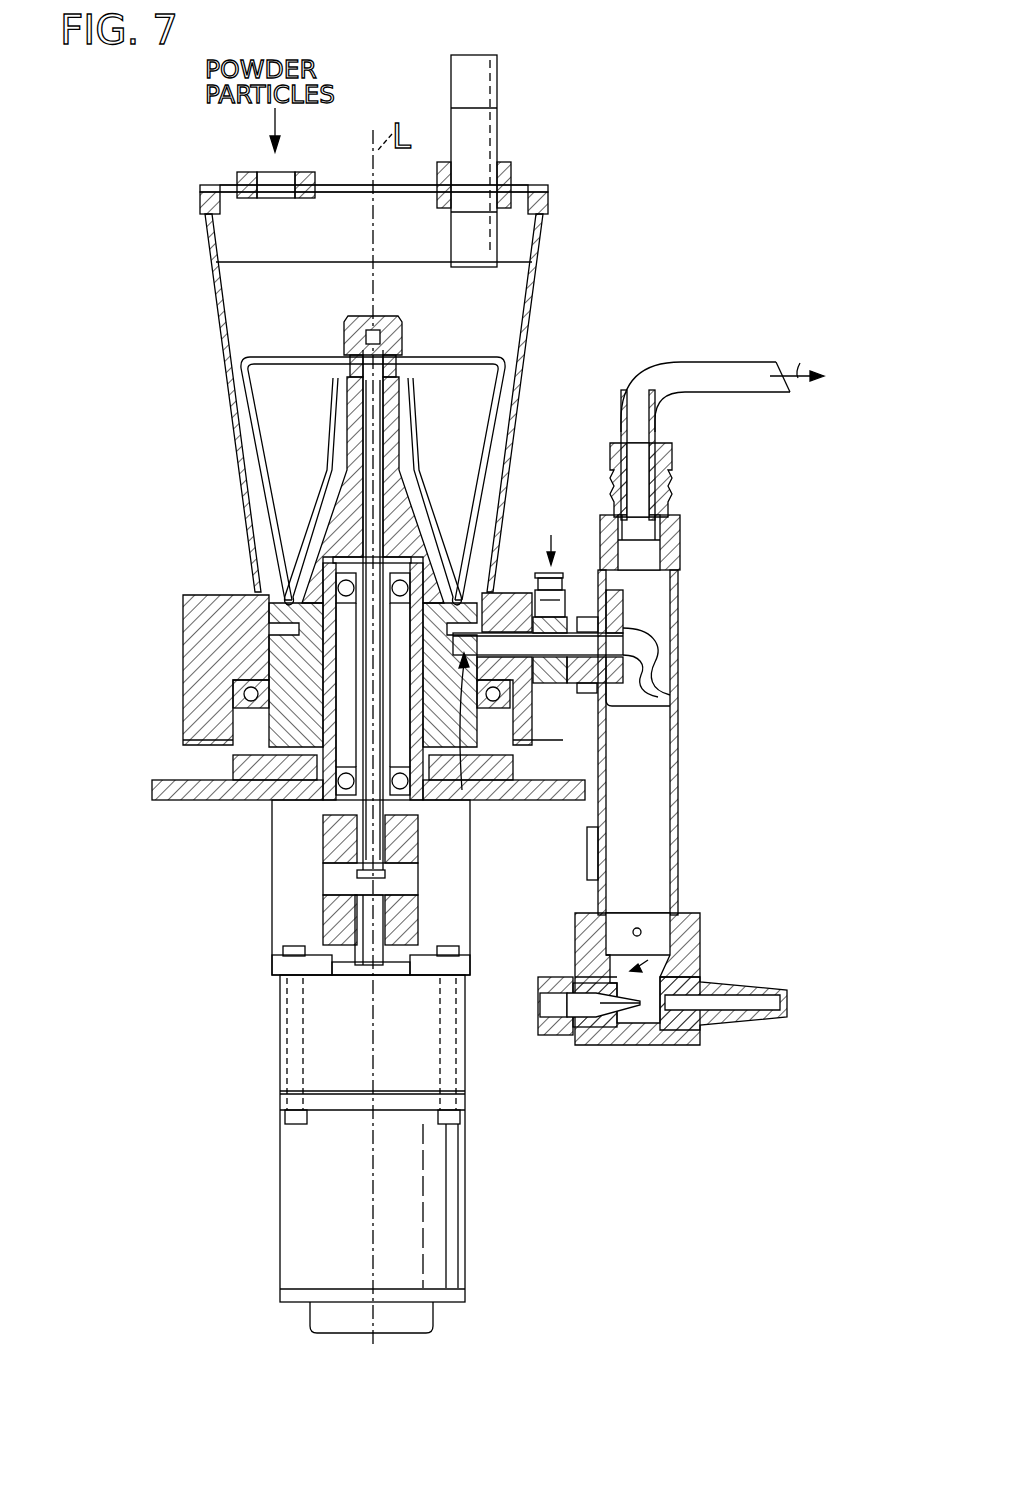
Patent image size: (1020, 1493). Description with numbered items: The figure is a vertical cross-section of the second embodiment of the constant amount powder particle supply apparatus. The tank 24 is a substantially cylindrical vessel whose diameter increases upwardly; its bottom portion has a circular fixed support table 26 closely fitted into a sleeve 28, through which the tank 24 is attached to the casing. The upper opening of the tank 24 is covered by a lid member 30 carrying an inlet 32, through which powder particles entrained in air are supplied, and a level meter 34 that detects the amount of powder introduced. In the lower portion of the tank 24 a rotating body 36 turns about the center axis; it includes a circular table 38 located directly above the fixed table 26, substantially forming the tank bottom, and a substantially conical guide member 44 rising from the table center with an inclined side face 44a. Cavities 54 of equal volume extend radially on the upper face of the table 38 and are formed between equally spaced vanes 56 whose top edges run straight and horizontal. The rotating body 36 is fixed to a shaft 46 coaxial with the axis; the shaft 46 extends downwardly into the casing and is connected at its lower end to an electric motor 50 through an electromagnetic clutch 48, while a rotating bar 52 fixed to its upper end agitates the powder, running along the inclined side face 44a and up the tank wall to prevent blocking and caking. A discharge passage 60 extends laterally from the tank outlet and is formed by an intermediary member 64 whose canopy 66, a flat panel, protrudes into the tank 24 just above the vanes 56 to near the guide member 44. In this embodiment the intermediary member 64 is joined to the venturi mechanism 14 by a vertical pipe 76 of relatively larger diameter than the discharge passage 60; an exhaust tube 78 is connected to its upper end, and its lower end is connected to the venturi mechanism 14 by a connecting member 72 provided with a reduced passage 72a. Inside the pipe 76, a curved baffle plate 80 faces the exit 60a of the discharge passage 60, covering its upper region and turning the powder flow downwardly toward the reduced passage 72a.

The venturi mechanism 14 is at (650, 1048).
The tank 24 is at (540, 320).
The circular fixed support table 26 is at (265, 800).
The sleeve 28 is at (195, 600).
The lid member 30 is at (343, 185).
The inlet 32 is at (250, 172).
The level meter 34 is at (497, 85).
The rotating body 36 is at (400, 528).
The circular table 38 is at (270, 665).
The guide member 44 is at (335, 538).
The inclined side face 44a is at (322, 500).
The shaft 46 is at (370, 440).
The electromagnetic clutch 48 is at (316, 922).
The electric motor 50 is at (295, 1205).
The rotating bar 52 is at (505, 378).
The cavities 54 is at (470, 802).
The vanes 56 is at (270, 640).
The discharge passage 60 is at (549, 662).
The exit 60a is at (648, 688).
The intermediary member 64 is at (598, 720).
The canopy 66 is at (472, 598).
The connecting member 72 is at (590, 958).
The reduced passage 72a is at (678, 936).
The vertical pipe 76 is at (680, 772).
The exhaust tube 78 is at (736, 405).
The baffle plate 80 is at (655, 650).